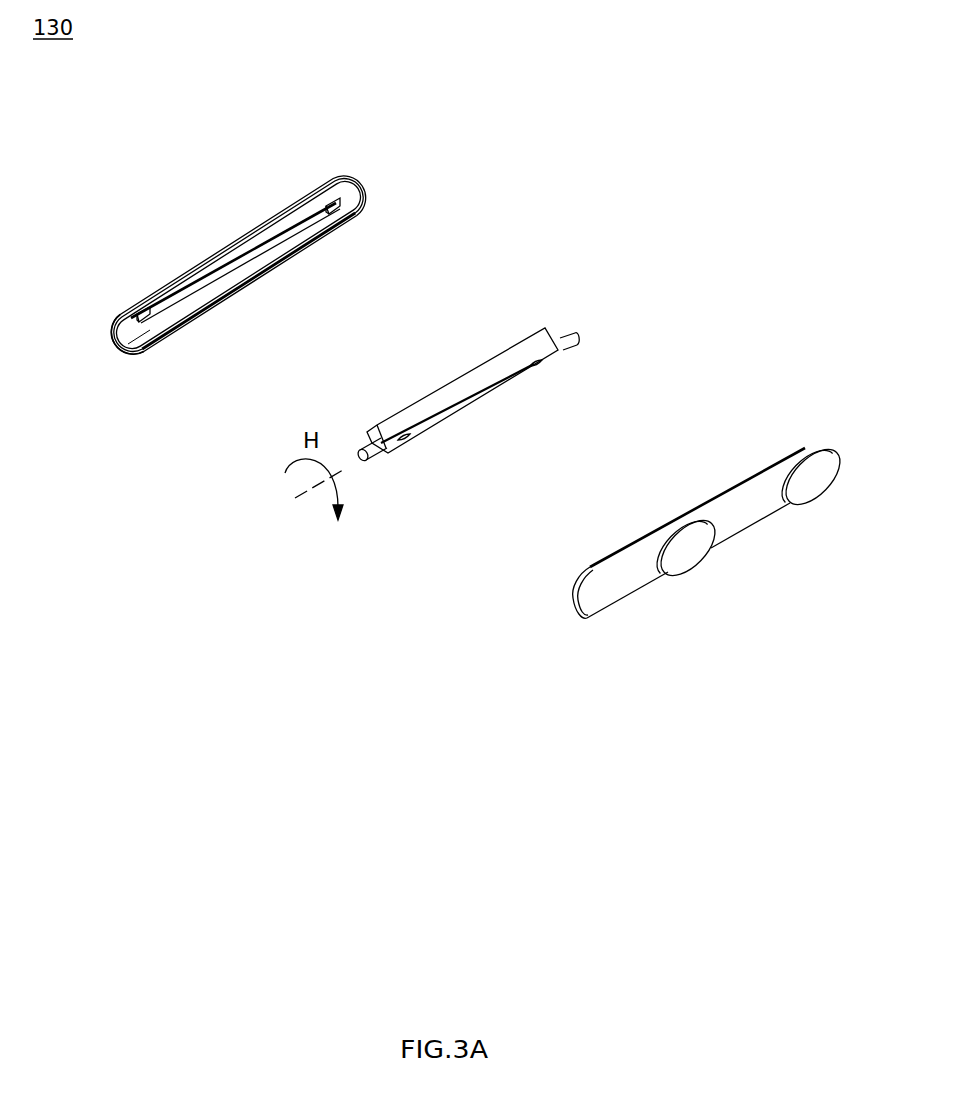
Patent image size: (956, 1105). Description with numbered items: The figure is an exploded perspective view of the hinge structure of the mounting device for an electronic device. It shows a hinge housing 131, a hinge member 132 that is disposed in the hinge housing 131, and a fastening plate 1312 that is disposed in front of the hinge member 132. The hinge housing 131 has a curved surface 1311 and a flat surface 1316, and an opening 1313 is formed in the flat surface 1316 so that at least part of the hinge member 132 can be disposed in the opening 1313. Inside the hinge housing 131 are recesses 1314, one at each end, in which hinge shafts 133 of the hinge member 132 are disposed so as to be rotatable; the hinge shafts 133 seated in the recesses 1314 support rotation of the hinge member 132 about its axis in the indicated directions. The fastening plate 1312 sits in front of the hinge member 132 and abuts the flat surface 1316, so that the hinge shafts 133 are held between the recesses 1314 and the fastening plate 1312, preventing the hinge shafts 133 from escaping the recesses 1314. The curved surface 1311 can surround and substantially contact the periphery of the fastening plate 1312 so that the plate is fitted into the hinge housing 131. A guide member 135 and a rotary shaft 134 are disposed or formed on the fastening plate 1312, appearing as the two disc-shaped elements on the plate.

The hinge housing 131 is at (368, 187).
The curved surface 1311 is at (118, 316).
The fastening plate 1312 is at (745, 497).
The opening 1313 is at (232, 268).
The recesses 1314 is at (337, 205).
The flat surface 1316 is at (125, 340).
The hinge member 132 is at (504, 349).
The hinge shafts 133 is at (575, 331).
The rotary shaft 134 is at (818, 470).
The guide member 135 is at (692, 545).